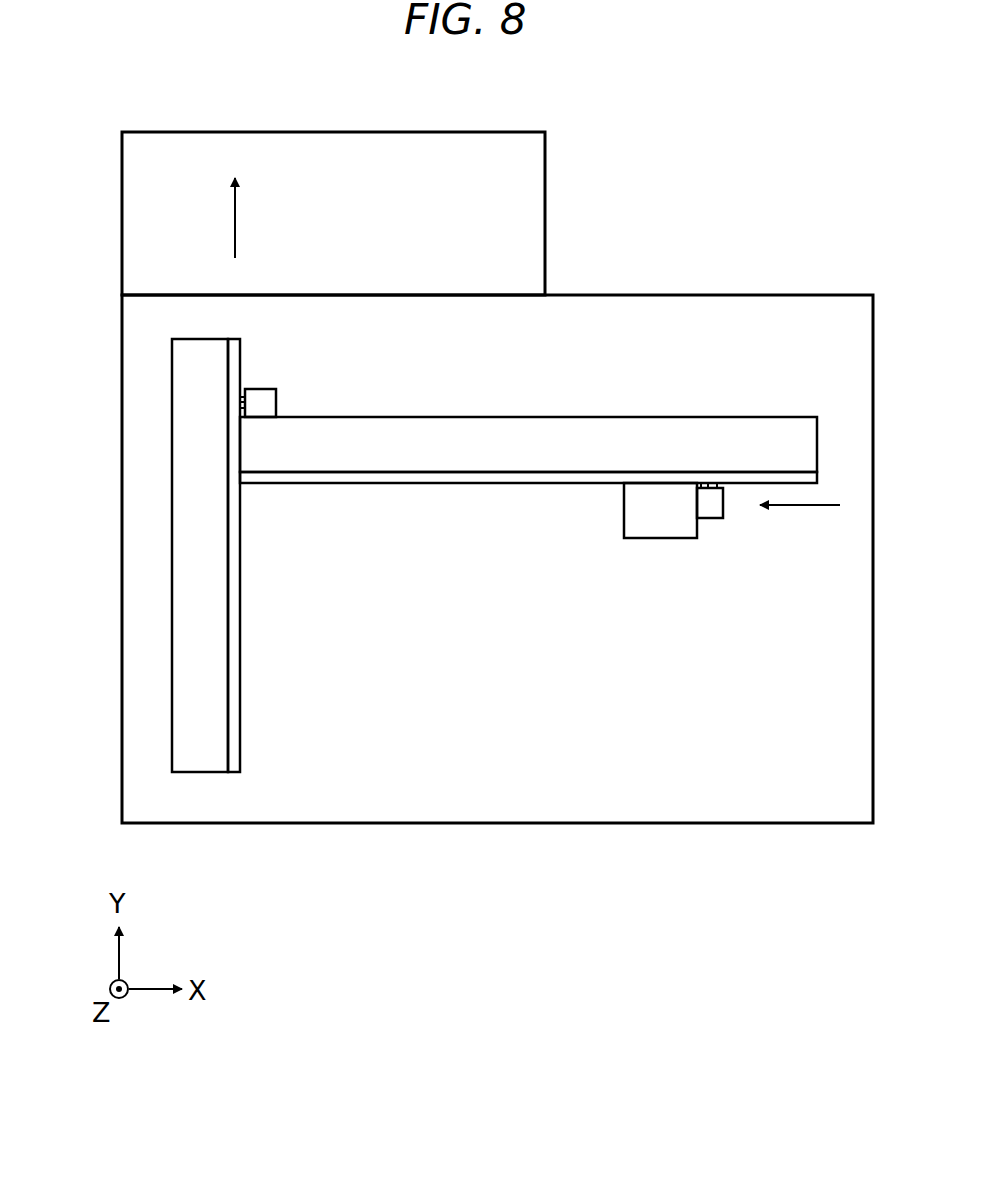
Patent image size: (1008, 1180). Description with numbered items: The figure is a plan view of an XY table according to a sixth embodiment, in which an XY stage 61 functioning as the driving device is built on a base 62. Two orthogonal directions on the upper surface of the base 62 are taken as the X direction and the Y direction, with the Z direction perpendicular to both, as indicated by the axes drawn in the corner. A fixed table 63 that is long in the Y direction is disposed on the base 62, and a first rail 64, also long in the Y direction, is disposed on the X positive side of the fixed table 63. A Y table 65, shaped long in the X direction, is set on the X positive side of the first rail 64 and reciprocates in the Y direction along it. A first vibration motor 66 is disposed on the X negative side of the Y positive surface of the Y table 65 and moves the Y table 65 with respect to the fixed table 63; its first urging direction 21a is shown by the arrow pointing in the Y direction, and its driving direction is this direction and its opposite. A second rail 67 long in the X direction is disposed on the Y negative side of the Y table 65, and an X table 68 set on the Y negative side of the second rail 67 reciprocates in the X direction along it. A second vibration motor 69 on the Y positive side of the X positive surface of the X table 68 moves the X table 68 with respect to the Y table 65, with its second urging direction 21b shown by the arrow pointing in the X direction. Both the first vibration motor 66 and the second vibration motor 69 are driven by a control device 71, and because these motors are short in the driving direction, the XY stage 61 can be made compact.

The XY stage 61 is at (780, 124).
The control device 71 is at (535, 208).
The base 62 is at (818, 810).
The first urging direction 21a is at (236, 224).
The second urging direction 21b is at (812, 508).
The fixed table 63 is at (187, 718).
The first rail 64 is at (242, 713).
The Y table 65 is at (462, 427).
The first vibration motor 66 is at (262, 397).
The second rail 67 is at (463, 485).
The X table 68 is at (654, 532).
The second vibration motor 69 is at (711, 512).